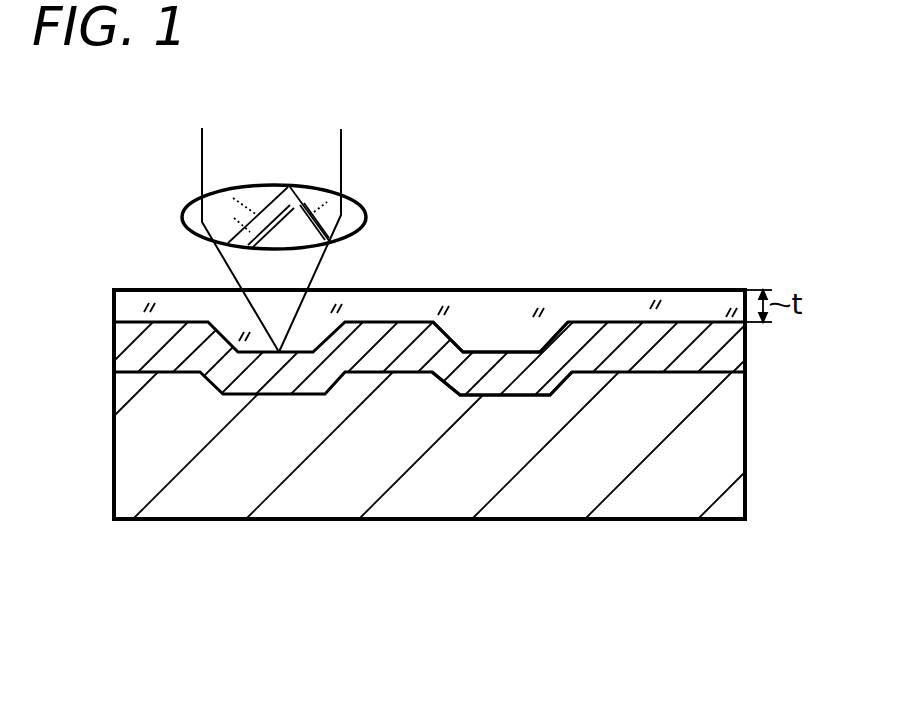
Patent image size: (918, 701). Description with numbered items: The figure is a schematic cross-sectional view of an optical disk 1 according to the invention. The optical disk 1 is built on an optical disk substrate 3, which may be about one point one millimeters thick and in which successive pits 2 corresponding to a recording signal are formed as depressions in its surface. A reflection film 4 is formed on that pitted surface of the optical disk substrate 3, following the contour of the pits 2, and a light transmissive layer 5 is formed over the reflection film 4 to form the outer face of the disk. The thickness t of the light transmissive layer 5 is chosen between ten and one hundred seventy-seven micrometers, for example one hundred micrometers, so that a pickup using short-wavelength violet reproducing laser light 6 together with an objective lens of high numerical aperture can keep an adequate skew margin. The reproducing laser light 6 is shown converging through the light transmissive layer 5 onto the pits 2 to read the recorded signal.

The optical disk 1 is at (45, 430).
The pits 2 is at (500, 397).
The optical disk substrate 3 is at (342, 488).
The reflection film 4 is at (613, 335).
The light transmissive layer 5 is at (699, 302).
The reproducing laser light 6 is at (341, 145).